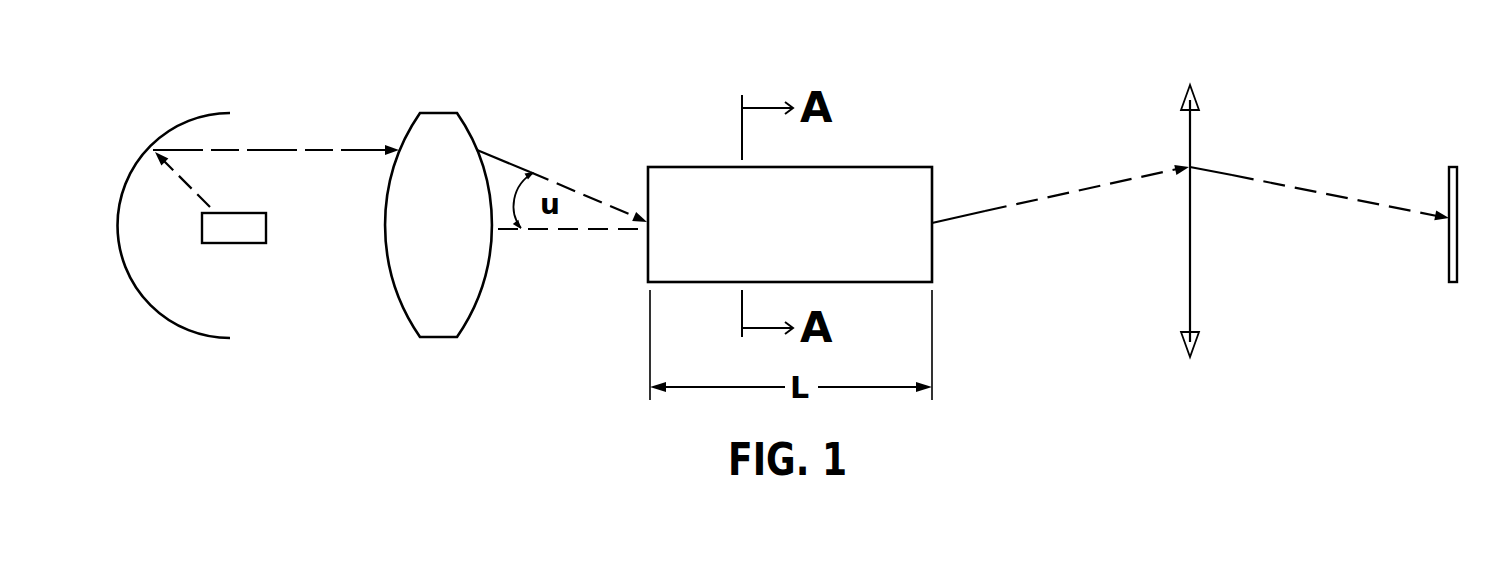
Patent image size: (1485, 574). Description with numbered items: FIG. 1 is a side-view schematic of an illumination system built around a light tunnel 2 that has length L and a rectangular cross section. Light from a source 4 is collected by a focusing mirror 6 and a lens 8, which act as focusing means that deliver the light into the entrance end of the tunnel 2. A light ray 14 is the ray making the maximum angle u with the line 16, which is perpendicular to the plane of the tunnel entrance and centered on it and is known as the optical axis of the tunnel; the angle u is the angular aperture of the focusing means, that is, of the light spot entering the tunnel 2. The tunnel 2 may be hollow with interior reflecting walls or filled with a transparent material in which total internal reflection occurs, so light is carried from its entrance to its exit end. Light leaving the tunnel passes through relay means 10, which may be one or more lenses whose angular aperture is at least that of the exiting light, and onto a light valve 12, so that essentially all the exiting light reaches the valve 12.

The light tunnel 2 is at (907, 165).
The light source 4 is at (247, 243).
The focusing mirror 6 is at (197, 113).
The lens 8 is at (397, 307).
The relay means 10 is at (1190, 290).
The light valve 12 is at (1451, 164).
The light ray 14 is at (300, 148).
The line 16 is at (598, 230).